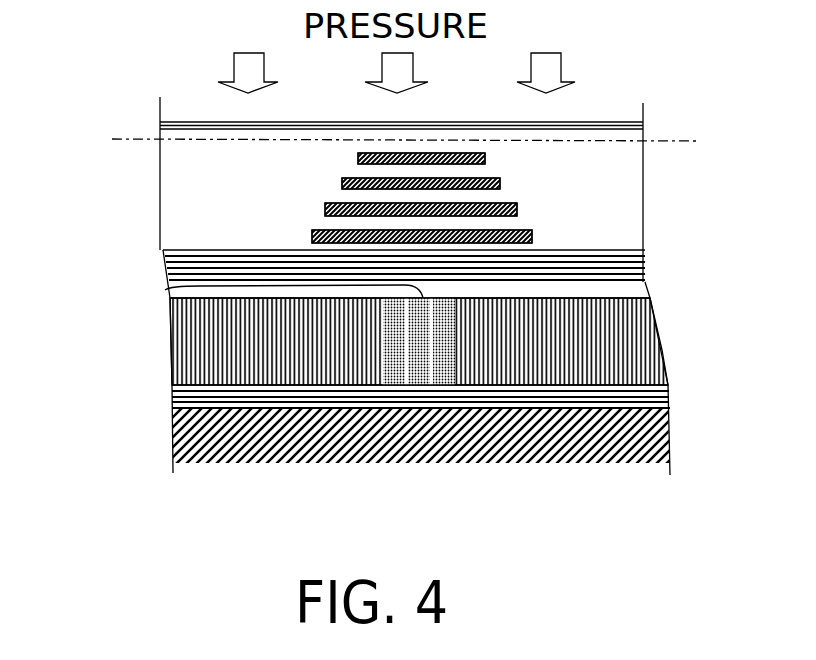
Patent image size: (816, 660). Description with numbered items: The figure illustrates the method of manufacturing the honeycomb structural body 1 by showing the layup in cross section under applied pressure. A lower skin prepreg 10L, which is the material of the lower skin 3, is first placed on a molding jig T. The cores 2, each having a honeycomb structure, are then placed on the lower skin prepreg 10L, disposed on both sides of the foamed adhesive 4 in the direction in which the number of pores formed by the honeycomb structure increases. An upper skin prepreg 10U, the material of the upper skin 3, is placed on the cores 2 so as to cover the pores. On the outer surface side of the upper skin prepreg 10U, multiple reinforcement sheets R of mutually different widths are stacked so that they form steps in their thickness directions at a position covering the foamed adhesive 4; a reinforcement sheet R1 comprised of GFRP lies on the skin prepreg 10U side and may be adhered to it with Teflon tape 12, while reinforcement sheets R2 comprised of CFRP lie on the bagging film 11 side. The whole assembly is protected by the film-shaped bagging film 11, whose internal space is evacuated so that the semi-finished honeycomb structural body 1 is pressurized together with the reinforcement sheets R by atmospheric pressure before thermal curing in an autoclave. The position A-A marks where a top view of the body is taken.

The honeycomb structural body 1 is at (370, 362).
The cores 2 is at (168, 358).
The skin 3 is at (677, 250).
The foamed adhesive 4 is at (165, 290).
The upper skin prepreg 10U is at (165, 253).
The lower skin prepreg 10L is at (170, 405).
The bagging film 11 is at (585, 123).
The Teflon tape 12 is at (528, 229).
The reinforcement sheet R is at (215, 153).
The reinforcement sheet comprised of GFRP R1 is at (312, 237).
The reinforcement sheet comprised of CFRP R2 is at (358, 157).
The molding jig T is at (172, 440).
The position A- A is at (150, 139).